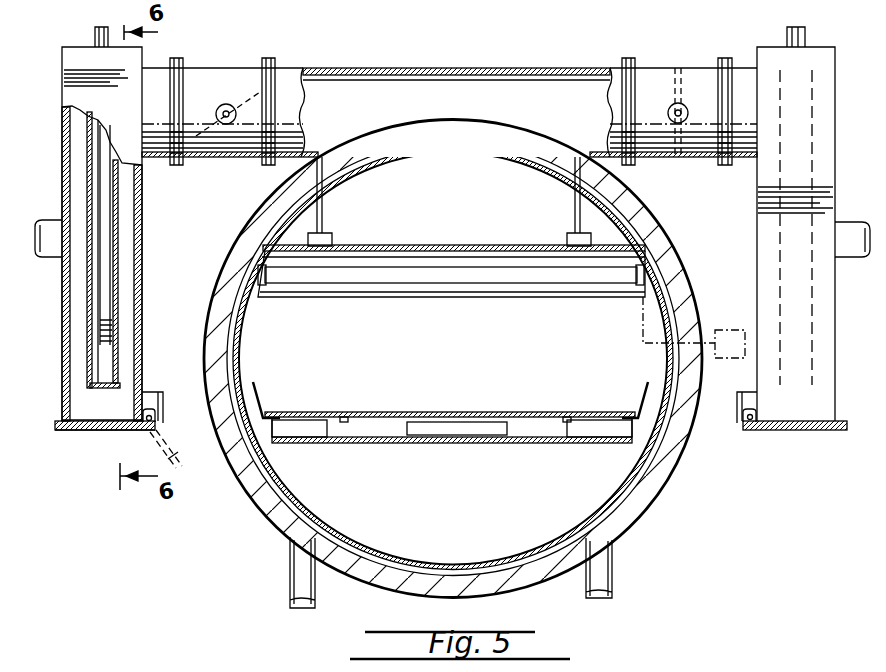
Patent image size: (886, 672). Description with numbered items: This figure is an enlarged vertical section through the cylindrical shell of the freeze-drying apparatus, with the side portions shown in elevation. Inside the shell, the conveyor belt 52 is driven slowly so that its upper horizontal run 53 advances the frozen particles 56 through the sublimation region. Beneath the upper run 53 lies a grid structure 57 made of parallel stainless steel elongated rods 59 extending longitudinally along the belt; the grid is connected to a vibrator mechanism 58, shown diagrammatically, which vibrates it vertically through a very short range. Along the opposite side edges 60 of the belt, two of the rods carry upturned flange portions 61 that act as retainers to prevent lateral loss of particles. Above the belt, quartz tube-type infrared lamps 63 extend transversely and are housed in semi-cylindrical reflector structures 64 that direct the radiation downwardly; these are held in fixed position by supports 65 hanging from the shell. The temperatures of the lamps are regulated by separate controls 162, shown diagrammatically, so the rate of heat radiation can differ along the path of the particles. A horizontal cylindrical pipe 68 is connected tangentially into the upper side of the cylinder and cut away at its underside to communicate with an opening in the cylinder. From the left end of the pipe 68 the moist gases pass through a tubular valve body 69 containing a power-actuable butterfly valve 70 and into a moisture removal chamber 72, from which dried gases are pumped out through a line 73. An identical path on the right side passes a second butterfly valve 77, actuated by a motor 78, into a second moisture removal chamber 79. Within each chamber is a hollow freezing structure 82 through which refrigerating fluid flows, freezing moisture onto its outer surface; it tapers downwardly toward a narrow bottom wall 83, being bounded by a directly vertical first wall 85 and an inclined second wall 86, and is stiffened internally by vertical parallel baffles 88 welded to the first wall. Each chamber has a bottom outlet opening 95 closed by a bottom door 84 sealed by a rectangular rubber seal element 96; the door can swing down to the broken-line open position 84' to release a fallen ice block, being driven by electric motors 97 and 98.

The conveyor belt 52 is at (386, 445).
The upper horizontal run 53 is at (327, 432).
The frozen particles 56 is at (560, 414).
The grid structure 57 is at (567, 436).
The vibrator mechanism 58 is at (462, 436).
The elongated rods 59 is at (344, 416).
The side edges 60 is at (272, 413).
The upturned flange portions 61 is at (270, 385).
The infrared lamps 63 is at (448, 274).
The reflector structures 64 is at (418, 247).
The supports 65 is at (323, 214).
The cylindrical pipe 68 is at (372, 69).
The tubular valve body 69 is at (250, 70).
The butterfly valve 70 is at (240, 100).
The moisture removal chamber 72 is at (142, 202).
The line 73 is at (48, 224).
The second butterfly valve 77 is at (674, 95).
The motor 78 is at (688, 108).
The second moisture removal chamber 79 is at (757, 212).
The hollow freezing structure 82 is at (118, 306).
The bottom wall 83 is at (88, 385).
The bottom door 84 is at (105, 454).
The open position of door 84' is at (178, 444).
The first wall 85 is at (118, 250).
The second wall 86 is at (87, 288).
The vertical parallel baffles 88 is at (115, 332).
The bottom outlet opening 95 is at (68, 431).
The rubber seal element 96 is at (68, 421).
The electric motor 97 is at (158, 394).
The electric motor 98 is at (745, 424).
The separate controls 162 is at (729, 332).